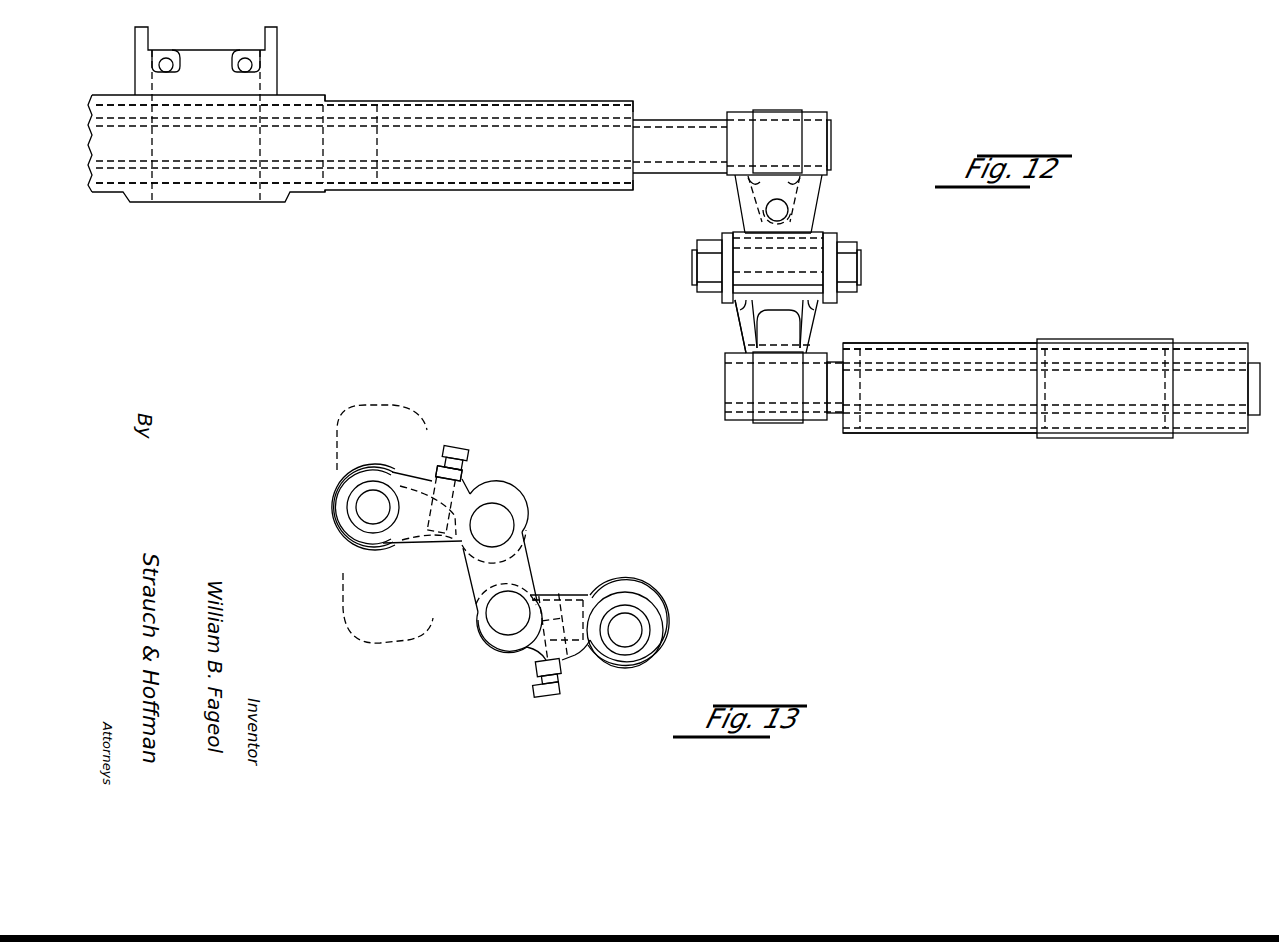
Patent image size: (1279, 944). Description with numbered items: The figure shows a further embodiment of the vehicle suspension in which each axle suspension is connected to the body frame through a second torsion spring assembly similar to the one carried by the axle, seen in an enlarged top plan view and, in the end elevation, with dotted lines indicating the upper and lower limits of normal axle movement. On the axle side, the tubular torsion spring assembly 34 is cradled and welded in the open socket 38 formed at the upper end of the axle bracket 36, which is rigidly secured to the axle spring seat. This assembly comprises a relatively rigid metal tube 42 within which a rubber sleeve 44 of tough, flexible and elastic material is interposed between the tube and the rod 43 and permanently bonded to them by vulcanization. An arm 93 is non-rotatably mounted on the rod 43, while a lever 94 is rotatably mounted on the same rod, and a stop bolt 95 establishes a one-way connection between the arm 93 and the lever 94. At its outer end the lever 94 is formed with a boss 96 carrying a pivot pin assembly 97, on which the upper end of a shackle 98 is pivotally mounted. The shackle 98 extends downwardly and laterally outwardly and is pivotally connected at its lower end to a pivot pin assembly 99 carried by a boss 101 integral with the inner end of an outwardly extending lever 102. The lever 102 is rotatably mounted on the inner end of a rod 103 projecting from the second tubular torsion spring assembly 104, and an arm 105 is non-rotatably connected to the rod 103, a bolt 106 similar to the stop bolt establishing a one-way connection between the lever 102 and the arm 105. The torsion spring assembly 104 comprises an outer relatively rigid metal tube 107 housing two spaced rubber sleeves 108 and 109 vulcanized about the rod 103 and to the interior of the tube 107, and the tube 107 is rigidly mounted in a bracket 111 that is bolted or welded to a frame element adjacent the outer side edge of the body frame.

In FIG. 12, the tubular torsion spring assembly 34 is at (495, 97).
In FIG. 13, the tubular torsion spring assembly 34 is at (342, 540).
In FIG. 12, the axle bracket 36 is at (277, 64).
In FIG. 12, the open socket 38 is at (325, 95).
In FIG. 12, the metal tube 42 is at (526, 190).
In FIG. 12, the rod 43 is at (662, 175).
In FIG. 13, the rod 43 is at (347, 495).
In FIG. 12, the rubber sleeve 44 is at (558, 112).
In FIG. 12, the arm 93 is at (805, 183).
In FIG. 13, the arm 93 is at (419, 544).
In FIG. 12, the lever 94 is at (805, 205).
In FIG. 12, the stop bolt 95 is at (770, 210).
In FIG. 13, the stop bolt 95 is at (455, 447).
In FIG. 12, the boss 96 is at (818, 233).
In FIG. 13, the boss 96 is at (518, 504).
In FIG. 12, the pivot pin assembly 97 is at (853, 258).
In FIG. 13, the pivot pin assembly 97 is at (514, 525).
In FIG. 12, the shackle 98 is at (837, 297).
In FIG. 13, the shackle 98 is at (532, 560).
In FIG. 12, the pivot pin assembly 99 is at (853, 280).
In FIG. 13, the pivot pin assembly 99 is at (466, 474).
In FIG. 12, the boss 101 is at (735, 303).
In FIG. 13, the boss 101 is at (492, 648).
In FIG. 12, the lever 102 is at (814, 335).
In FIG. 13, the lever 102 is at (590, 595).
In FIG. 12, the rod 103 is at (725, 384).
In FIG. 13, the rod 103 is at (642, 630).
In FIG. 12, the tubular torsion spring assembly 104 is at (950, 433).
In FIG. 13, the tubular torsion spring assembly 104 is at (652, 598).
In FIG. 12, the arm 105 is at (776, 421).
In FIG. 13, the arm 105 is at (557, 595).
In FIG. 13, the bolt 106 is at (548, 694).
In FIG. 12, the outer metal tube 107 is at (940, 344).
In FIG. 13, the outer metal tube 107 is at (668, 645).
In FIG. 12, the rubber sleeve 108 is at (1010, 351).
In FIG. 12, the rubber sleeve 109 is at (1205, 352).
In FIG. 12, the bracket 111 is at (1095, 339).